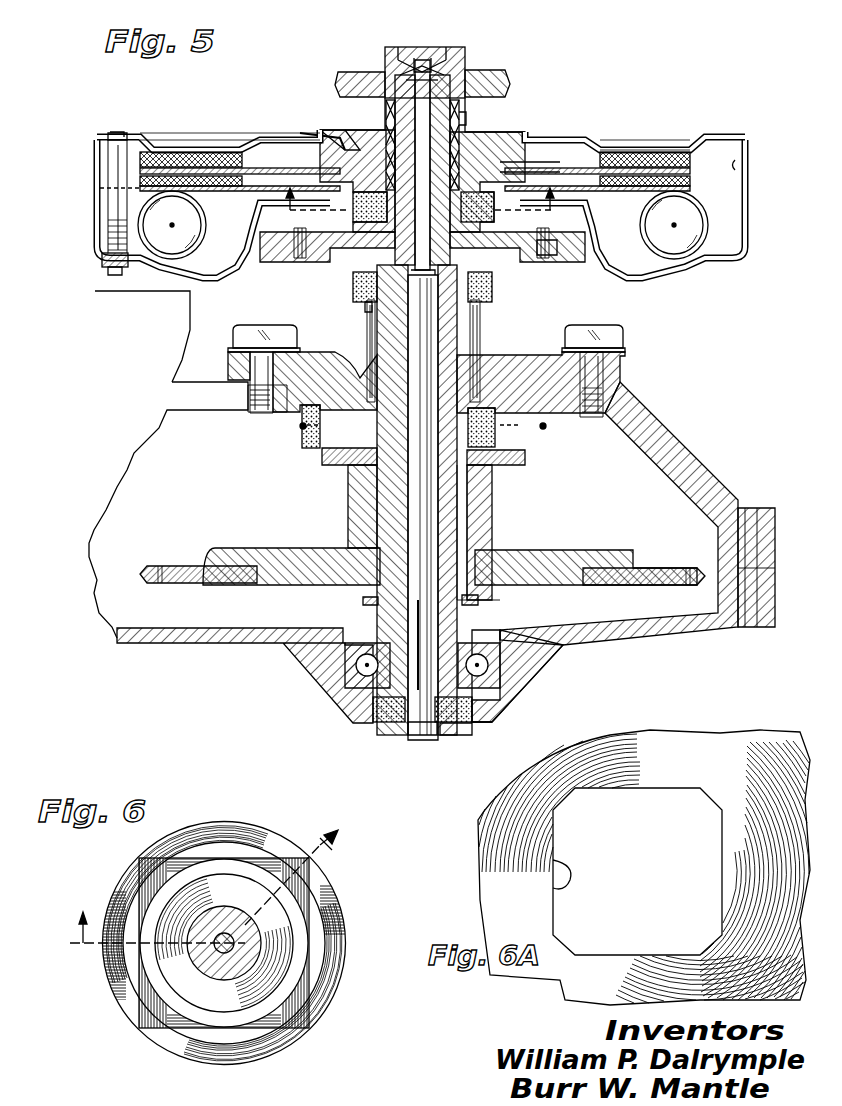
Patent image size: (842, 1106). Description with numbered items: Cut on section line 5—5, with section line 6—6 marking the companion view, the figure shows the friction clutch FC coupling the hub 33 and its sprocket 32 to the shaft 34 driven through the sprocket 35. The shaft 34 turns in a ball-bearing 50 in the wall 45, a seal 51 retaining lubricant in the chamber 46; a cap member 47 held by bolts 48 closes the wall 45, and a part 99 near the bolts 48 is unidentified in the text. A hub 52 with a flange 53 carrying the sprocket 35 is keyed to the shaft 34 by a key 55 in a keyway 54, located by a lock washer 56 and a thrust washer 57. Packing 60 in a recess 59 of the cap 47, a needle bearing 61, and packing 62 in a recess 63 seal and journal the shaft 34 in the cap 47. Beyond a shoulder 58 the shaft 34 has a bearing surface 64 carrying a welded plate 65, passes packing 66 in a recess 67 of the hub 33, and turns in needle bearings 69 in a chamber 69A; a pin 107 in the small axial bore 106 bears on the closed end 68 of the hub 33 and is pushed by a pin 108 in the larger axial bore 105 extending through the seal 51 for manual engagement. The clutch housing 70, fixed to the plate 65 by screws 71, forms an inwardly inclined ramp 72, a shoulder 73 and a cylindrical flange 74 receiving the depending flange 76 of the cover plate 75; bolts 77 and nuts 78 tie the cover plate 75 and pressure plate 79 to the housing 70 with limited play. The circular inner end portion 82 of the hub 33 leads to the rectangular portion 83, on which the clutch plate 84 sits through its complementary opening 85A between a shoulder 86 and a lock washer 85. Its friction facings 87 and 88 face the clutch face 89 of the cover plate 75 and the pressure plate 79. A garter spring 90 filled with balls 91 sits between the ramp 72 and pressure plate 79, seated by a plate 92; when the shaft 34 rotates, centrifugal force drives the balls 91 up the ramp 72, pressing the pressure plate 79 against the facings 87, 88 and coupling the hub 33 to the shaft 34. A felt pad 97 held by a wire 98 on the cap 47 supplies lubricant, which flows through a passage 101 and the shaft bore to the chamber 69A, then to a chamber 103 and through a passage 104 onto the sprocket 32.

In FIG. 6, the section line 5 is at (193, 876).
In FIG. 5, the section line 6 is at (418, 206).
In FIG. 5, the sprocket 32 is at (480, 90).
In FIG. 5, the hub 33 is at (380, 47).
In FIG. 5, the shaft 34 is at (462, 630).
In FIG. 5, the sprocket 35 is at (655, 575).
In FIG. 5, the wall 45 is at (610, 640).
In FIG. 5, the chamber 46 is at (183, 508).
In FIG. 5, the cap member 47 is at (535, 345).
In FIG. 5, the bolts 48 is at (255, 325).
In FIG. 5, the ball-bearing 50 is at (358, 672).
In FIG. 5, the seal 51 is at (380, 720).
In FIG. 5, the hub 52 is at (485, 505).
In FIG. 5, the flange 53 is at (590, 555).
In FIG. 5, the keyway 54 is at (470, 516).
In FIG. 5, the key 55 is at (470, 570).
In FIG. 5, the lock washer 56 is at (485, 603).
In FIG. 5, the thrust washer 57 is at (530, 460).
In FIG. 5, the shoulder 58 is at (345, 255).
In FIG. 5, the recess 59 is at (320, 455).
In FIG. 5, the packing 60 is at (375, 480).
In FIG. 5, the needle bearing 61 is at (485, 325).
In FIG. 5, the packing 62 is at (362, 308).
In FIG. 5, the recess 63 is at (350, 287).
In FIG. 5, the bearing surface 64 is at (510, 262).
In FIG. 5, the plate 65 is at (560, 250).
In FIG. 5, the packing 66 is at (515, 165).
In FIG. 5, the recess 67 is at (496, 205).
In FIG. 5, the closed end 68 is at (402, 58).
In FIG. 5, the needle bearings 69 is at (462, 105).
In FIG. 5, the chamber 69A is at (463, 125).
In FIG. 5, the clutch housing 70 is at (750, 205).
In FIG. 5, the screws 71 is at (295, 258).
In FIG. 5, the ramp 72 is at (665, 280).
In FIG. 5, the shoulder 73 is at (715, 262).
In FIG. 5, the cylindrical flange 74 is at (748, 190).
In FIG. 5, the cover plate 75 is at (718, 138).
In FIG. 5, the depending flange 76 is at (740, 163).
In FIG. 5, the bolts 77 is at (110, 165).
In FIG. 5, the nut 78 is at (100, 260).
In FIG. 5, the pressure plate 79 is at (140, 188).
In FIG. 5, the inner end portion 82 is at (350, 207).
In FIG. 6, the inner end portion 82 is at (318, 938).
In FIG. 5, the portion 83 is at (355, 140).
In FIG. 6, the portion 83 is at (265, 862).
In FIG. 5, the clutch plate 84 is at (258, 170).
In FIG. 6A, the clutch plate 84 is at (665, 760).
In FIG. 5, the lock washer 85 is at (525, 182).
In FIG. 6A, the opening 85A is at (552, 890).
In FIG. 5, the shoulder 86 is at (333, 145).
In FIG. 5, the friction facing 87 is at (195, 155).
In FIG. 5, the friction facing 88 is at (250, 181).
In FIG. 5, the clutch face 89 is at (172, 135).
In FIG. 5, the garter spring 90 is at (200, 262).
In FIG. 5, the balls 91 is at (170, 240).
In FIG. 5, the plate 92 is at (617, 218).
In FIG. 5, the felt pad 97 is at (300, 435).
In FIG. 5, the retaining wire 98 is at (548, 430).
In FIG. 5, the nut 99 is at (296, 415).
In FIG. 5, the passage 101 is at (375, 355).
In FIG. 5, the chamber 103 is at (436, 70).
In FIG. 5, the passage 104 is at (442, 80).
In FIG. 5, the axial bore 105 is at (415, 520).
In FIG. 5, the axial bore 106 is at (478, 160).
In FIG. 5, the pin 107 is at (422, 62).
In FIG. 5, the pin 108 is at (415, 612).
In FIG. 5, the friction clutch FC is at (142, 130).